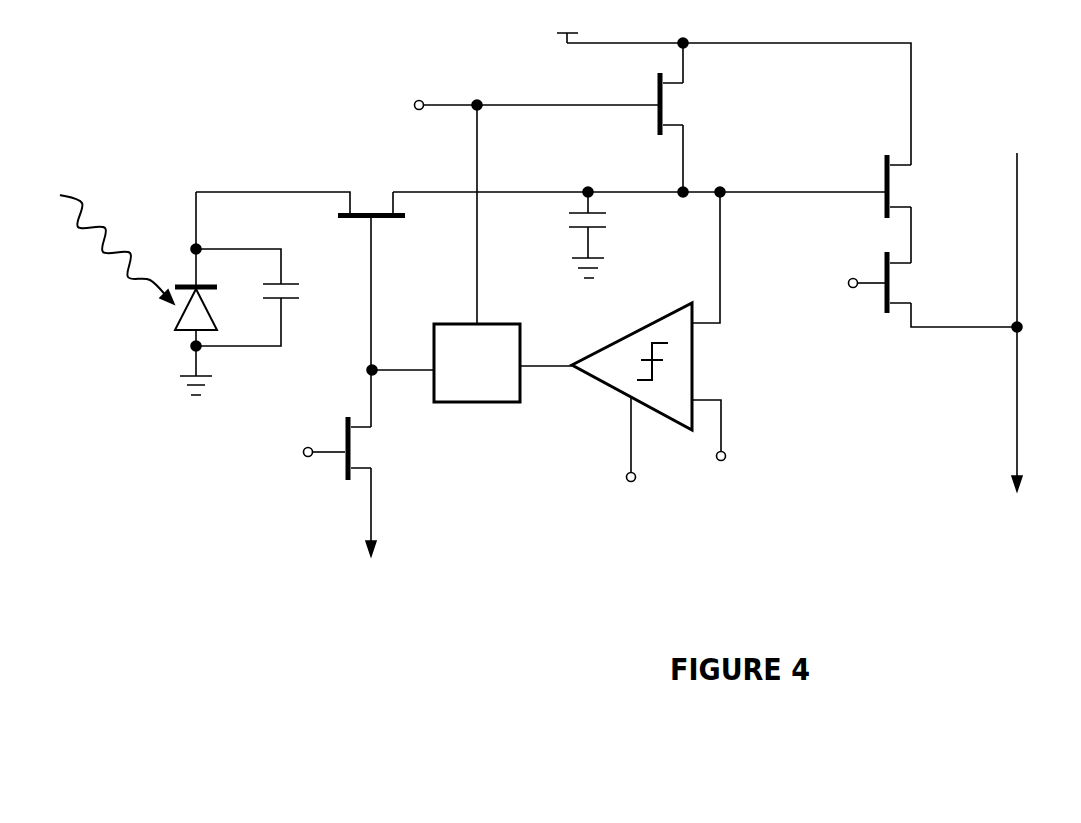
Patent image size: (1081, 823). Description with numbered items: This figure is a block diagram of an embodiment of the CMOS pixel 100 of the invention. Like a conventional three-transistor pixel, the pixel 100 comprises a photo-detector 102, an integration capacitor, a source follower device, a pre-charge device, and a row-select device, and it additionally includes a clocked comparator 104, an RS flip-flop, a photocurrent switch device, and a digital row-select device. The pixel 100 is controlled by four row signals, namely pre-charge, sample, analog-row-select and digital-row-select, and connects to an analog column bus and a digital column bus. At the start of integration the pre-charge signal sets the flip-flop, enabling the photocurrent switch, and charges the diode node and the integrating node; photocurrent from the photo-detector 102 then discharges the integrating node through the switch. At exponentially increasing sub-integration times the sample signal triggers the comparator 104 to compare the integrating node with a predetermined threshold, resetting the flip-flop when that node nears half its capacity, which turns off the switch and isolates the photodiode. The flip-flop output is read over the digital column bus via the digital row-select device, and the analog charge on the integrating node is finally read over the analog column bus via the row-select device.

The pixel 100 is at (263, 55).
The photo-detector 102 is at (138, 293).
The clocked comparator 104 is at (664, 412).